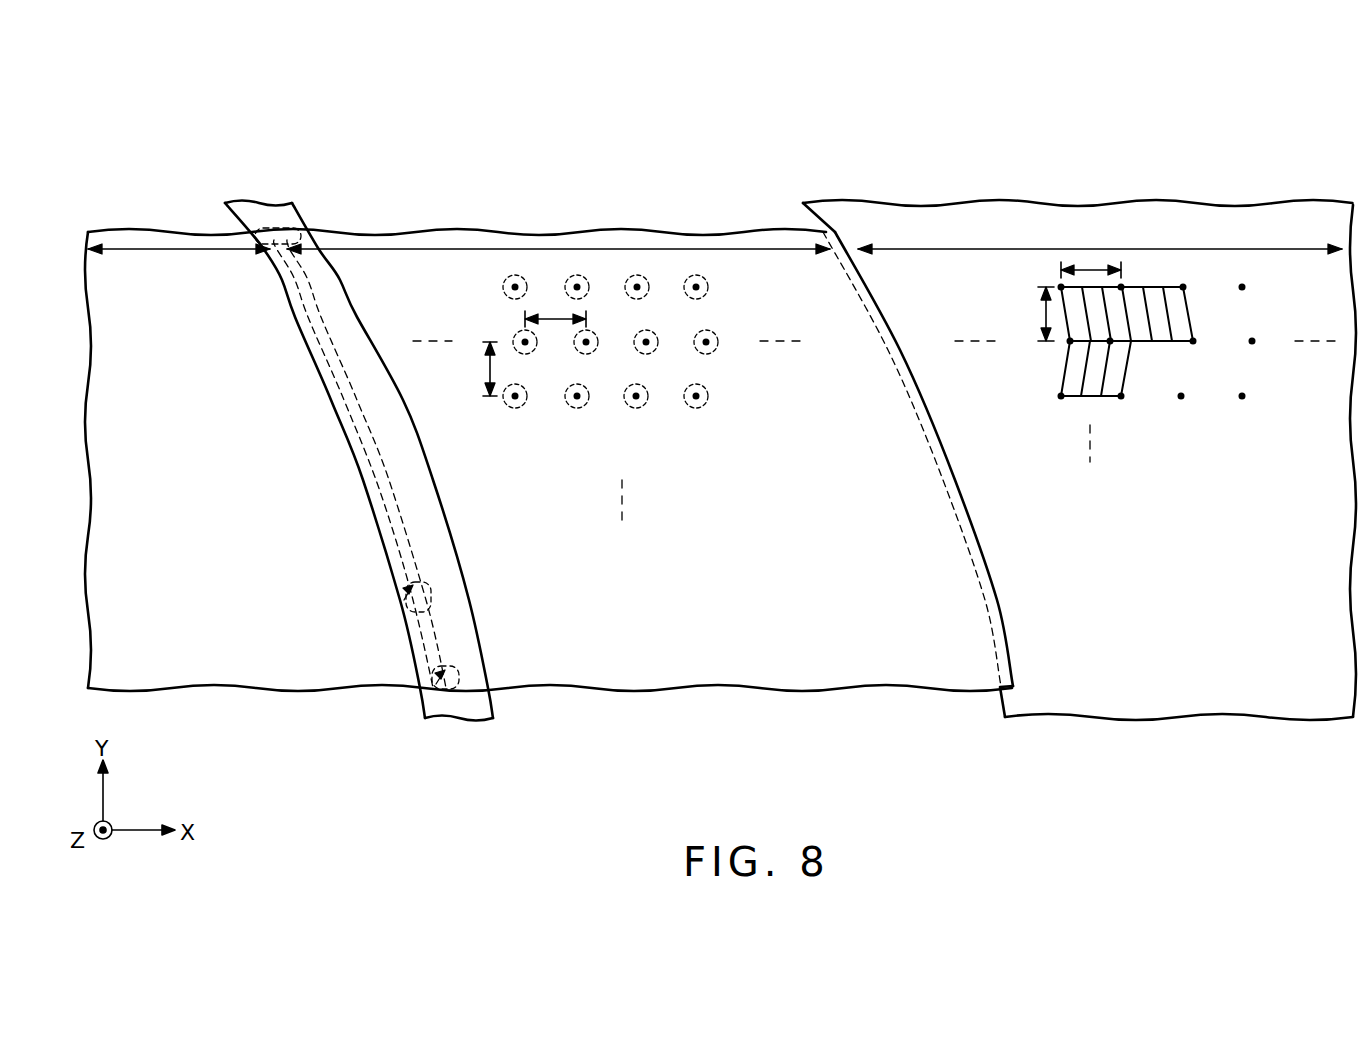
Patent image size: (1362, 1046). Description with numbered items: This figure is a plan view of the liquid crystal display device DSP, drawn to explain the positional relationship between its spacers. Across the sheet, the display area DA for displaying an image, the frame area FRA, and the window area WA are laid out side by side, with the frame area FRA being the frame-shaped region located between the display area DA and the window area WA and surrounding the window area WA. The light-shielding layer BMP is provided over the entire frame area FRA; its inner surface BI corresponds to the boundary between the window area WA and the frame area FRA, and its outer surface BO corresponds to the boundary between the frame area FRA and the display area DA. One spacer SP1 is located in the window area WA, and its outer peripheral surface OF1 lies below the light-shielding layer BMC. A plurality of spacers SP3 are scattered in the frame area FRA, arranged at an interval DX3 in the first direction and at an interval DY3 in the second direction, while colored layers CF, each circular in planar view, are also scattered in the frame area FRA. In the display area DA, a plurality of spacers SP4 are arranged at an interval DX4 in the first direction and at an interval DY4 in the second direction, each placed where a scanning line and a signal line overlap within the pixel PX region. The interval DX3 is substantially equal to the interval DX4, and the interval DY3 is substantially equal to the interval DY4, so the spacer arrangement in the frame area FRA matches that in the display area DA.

The liquid crystal display device DSP is at (1050, 102).
The window area WA is at (165, 249).
The frame area FRA is at (598, 249).
The display area DA is at (1148, 249).
The light-shielding layer BMP is at (742, 688).
The light-shielding layer BMC is at (465, 717).
The inner surface BI is at (431, 612).
The outer surface BO is at (1004, 579).
The outer peripheral surface OF1 is at (450, 694).
The spacer SP1 is at (266, 688).
The spacers SP3 is at (507, 404).
The spacers SP4 is at (1061, 398).
The colored layers CF is at (527, 404).
The pixel PX is at (1070, 371).
The interval DX3 is at (560, 319).
The interval DY3 is at (468, 369).
The interval DX4 is at (1092, 270).
The interval DY4 is at (1025, 314).